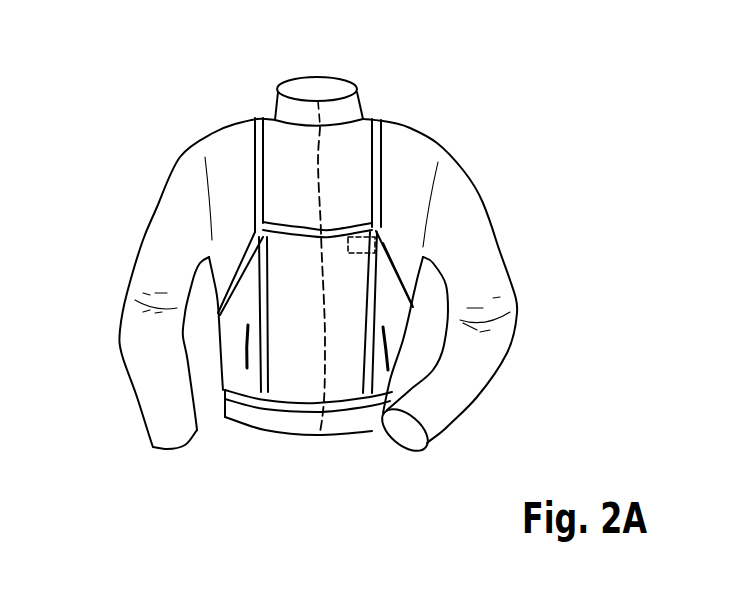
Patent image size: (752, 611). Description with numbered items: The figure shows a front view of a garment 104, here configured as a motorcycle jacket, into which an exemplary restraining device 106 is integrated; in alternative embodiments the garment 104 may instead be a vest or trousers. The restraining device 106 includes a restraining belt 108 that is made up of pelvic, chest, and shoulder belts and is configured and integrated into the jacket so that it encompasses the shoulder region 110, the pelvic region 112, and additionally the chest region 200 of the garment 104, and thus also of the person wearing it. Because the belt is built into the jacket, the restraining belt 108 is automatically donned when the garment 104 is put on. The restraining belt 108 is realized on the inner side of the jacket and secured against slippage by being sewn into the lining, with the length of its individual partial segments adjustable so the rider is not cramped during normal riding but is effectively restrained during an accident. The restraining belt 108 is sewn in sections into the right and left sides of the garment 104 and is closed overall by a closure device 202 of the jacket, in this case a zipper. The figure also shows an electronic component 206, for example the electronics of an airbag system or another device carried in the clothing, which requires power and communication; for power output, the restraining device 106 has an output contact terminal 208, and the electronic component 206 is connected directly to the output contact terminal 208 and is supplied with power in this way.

The garment 104 is at (206, 74).
The restraining device 106 is at (244, 164).
The restraining belt 108 is at (260, 187).
The shoulder region 110 is at (254, 150).
The pelvic region 112 is at (257, 413).
The chest region 200 is at (295, 250).
The closure device 202 is at (325, 355).
The electronic component 206 is at (375, 237).
The output contact terminal 208 is at (391, 240).